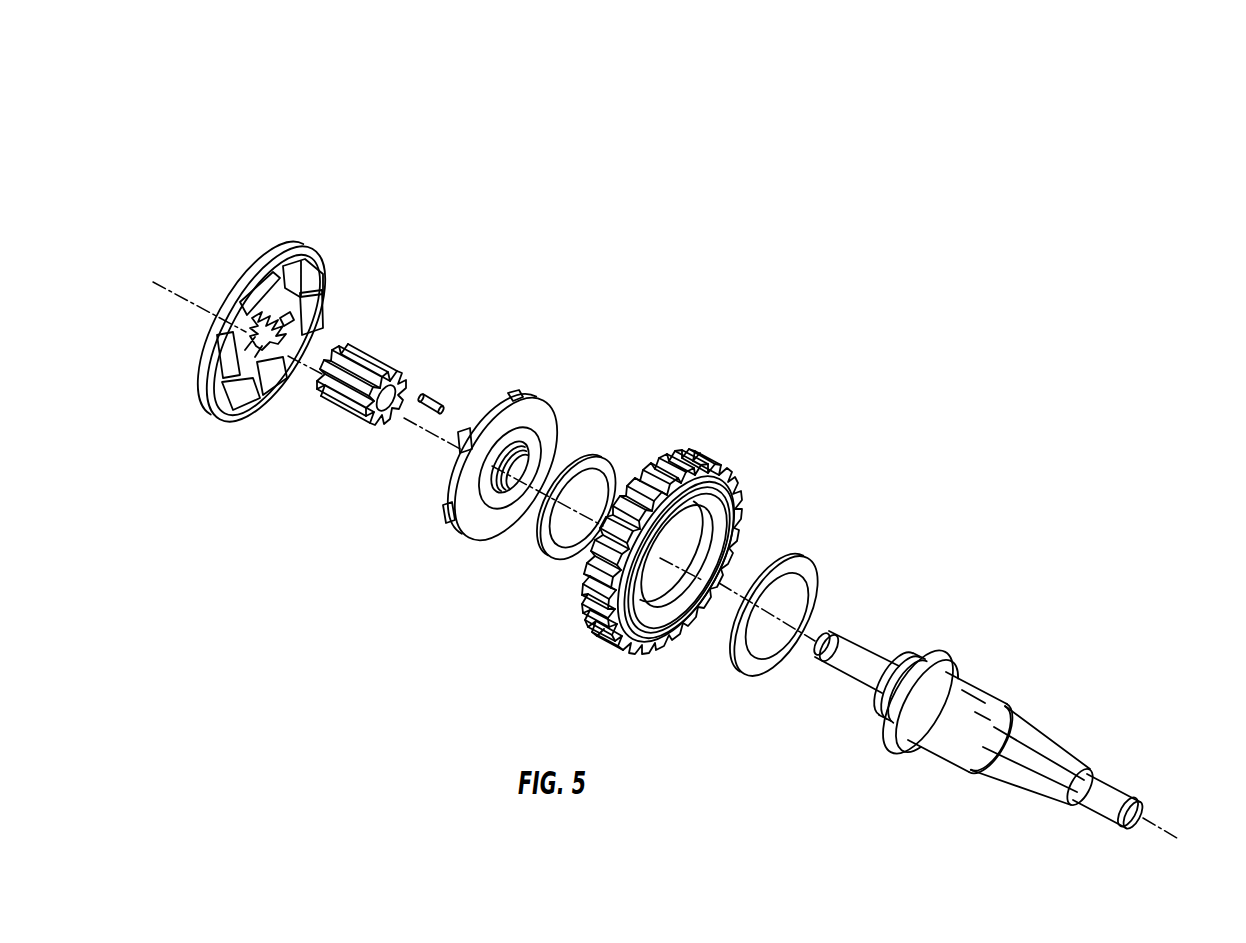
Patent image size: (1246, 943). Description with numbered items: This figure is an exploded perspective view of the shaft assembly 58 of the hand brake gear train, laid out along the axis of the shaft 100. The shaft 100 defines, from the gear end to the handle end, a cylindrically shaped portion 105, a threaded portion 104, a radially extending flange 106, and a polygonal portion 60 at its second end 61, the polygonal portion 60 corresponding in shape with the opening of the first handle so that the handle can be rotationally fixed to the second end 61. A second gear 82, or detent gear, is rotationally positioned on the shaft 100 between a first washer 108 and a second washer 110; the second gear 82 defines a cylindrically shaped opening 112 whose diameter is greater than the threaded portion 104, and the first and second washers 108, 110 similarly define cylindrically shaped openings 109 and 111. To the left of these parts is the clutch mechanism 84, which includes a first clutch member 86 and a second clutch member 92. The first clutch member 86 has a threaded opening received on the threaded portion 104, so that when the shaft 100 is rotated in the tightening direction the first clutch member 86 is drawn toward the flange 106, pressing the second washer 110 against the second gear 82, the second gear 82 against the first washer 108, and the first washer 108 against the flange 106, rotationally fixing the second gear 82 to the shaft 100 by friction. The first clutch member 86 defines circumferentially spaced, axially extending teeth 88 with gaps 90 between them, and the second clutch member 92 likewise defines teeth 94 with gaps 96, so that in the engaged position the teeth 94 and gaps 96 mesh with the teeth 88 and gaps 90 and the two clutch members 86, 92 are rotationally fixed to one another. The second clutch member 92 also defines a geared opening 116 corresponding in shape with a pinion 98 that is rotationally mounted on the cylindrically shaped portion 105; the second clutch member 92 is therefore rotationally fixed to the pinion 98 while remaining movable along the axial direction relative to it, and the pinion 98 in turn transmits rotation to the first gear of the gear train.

The shaft assembly 58 is at (790, 352).
The clutch mechanism 84 is at (388, 152).
The second clutch member 92 is at (276, 315).
The teeth 94 is at (323, 263).
The gaps 96 is at (288, 267).
The geared opening 116 is at (289, 318).
The pinion 98 is at (369, 348).
The teeth 88 is at (517, 391).
The gaps 90 is at (469, 412).
The first clutch member 86 is at (509, 438).
The second washer 110 is at (594, 480).
The cylindrically shaped opening 111 is at (594, 490).
The second gear 82 is at (690, 532).
The cylindrically shaped opening 112 is at (676, 545).
The first washer 108 is at (798, 589).
The cylindrically shaped opening 109 is at (787, 604).
The shaft 100 is at (987, 699).
The cylindrically shaped portion 105 is at (873, 652).
The threaded portion 104 is at (870, 718).
The flange 106 is at (943, 645).
The polygonal portion 60 is at (1050, 747).
The second end 61 is at (1147, 808).